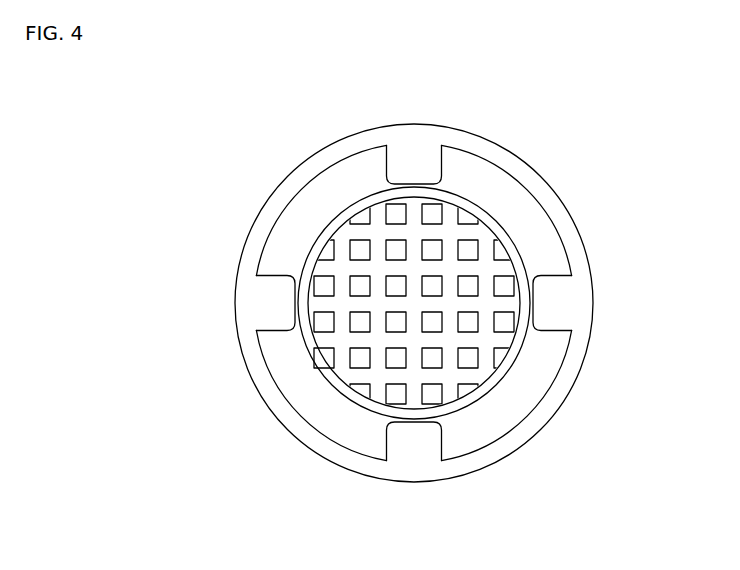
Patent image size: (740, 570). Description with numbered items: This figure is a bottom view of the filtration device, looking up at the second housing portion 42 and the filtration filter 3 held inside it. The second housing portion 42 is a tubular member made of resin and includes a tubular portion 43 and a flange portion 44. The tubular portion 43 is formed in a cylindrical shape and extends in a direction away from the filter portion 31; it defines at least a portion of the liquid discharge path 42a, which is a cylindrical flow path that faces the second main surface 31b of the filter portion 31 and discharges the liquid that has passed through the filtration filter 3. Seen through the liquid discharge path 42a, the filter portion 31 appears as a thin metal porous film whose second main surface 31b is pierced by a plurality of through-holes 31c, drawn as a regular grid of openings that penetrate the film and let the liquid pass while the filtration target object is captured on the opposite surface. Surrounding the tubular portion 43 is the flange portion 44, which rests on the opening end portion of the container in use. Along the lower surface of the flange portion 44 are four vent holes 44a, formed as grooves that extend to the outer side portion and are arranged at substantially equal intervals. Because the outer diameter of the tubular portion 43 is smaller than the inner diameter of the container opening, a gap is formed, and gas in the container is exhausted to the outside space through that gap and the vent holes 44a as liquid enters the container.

The filtration filter 3 is at (340, 237).
The filter portion 31 is at (349, 314).
The second main surface 31b is at (376, 395).
The through-holes 31c is at (360, 357).
The second housing portion 42 is at (460, 128).
The liquid discharge path 42a is at (484, 371).
The tubular portion 43 is at (477, 397).
The flange portion 44 is at (510, 200).
The vent holes 44a is at (439, 165).